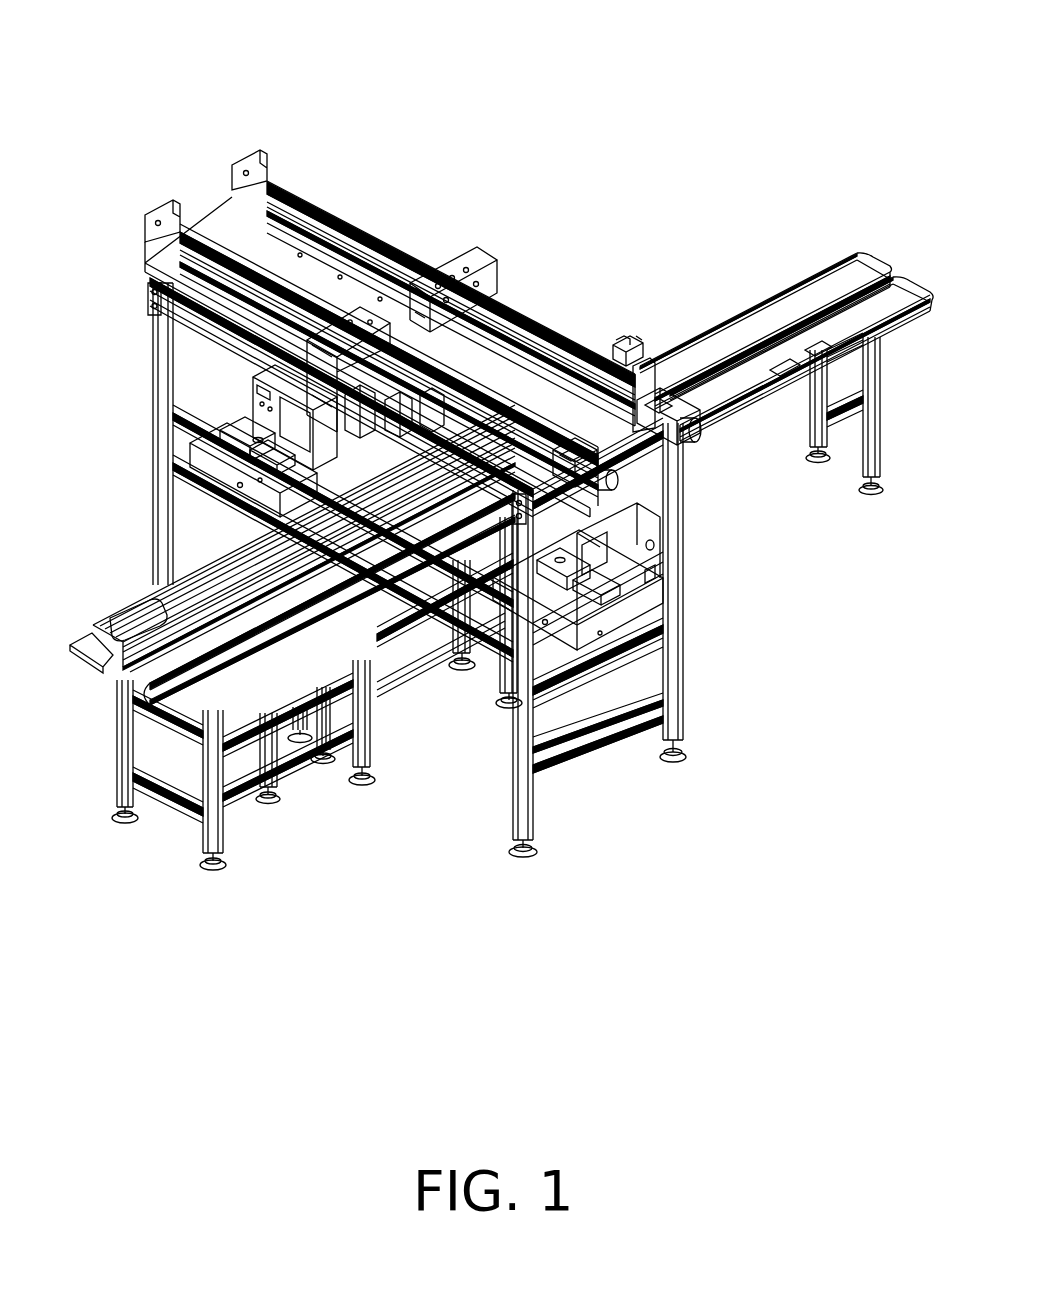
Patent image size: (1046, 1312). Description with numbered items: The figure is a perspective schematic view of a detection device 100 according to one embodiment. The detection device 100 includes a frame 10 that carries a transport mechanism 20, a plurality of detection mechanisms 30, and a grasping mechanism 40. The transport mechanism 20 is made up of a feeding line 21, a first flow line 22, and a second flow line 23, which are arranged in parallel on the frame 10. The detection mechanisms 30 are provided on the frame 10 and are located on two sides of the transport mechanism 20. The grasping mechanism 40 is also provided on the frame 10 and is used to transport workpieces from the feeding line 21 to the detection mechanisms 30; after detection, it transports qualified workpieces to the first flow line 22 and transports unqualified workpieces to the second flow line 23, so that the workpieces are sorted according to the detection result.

The detection device 100 is at (530, 40).
The frame 10 is at (604, 740).
The transport mechanism 20 is at (622, 287).
The feeding line 21 is at (641, 343).
The first flow line 22 is at (746, 330).
The second flow line 23 is at (822, 337).
The detection mechanism 30 is at (196, 456).
The grasping mechanism 40 is at (474, 257).